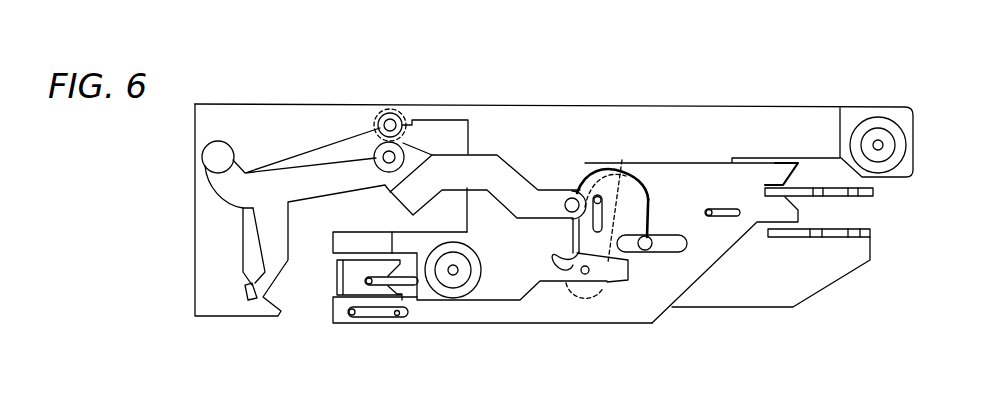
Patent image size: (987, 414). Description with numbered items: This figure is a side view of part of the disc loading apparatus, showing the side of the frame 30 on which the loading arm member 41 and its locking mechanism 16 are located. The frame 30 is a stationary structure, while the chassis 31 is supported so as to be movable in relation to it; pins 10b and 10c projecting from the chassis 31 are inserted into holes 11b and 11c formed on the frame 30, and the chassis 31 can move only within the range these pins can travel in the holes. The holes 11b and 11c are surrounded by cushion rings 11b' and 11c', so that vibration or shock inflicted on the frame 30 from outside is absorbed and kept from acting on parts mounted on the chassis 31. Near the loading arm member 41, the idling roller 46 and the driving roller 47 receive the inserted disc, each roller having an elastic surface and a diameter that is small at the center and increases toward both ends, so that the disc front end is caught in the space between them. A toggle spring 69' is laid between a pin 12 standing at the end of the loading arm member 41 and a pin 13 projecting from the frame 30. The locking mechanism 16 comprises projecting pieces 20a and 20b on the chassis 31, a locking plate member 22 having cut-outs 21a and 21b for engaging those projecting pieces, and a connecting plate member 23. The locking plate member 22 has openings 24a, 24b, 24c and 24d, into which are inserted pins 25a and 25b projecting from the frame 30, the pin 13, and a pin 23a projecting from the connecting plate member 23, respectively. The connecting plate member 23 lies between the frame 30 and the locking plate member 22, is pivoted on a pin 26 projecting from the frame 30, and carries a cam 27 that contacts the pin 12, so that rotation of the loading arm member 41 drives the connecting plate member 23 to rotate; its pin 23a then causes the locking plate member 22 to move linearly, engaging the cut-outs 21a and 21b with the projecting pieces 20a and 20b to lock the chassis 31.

The frame 30 is at (557, 112).
The idling roller 46 is at (414, 131).
The driving roller 47 is at (374, 152).
The loading arm member 41 is at (514, 184).
The pin 12 is at (566, 198).
The cam 27 is at (571, 240).
The connecting plate member 23 is at (560, 300).
The pin 26 is at (596, 300).
The pin 13 is at (663, 236).
The toggle spring 69' is at (669, 186).
The opening 24d is at (603, 215).
The pin 23a is at (594, 196).
The opening 24c is at (670, 248).
The opening 24b is at (738, 218).
The pin 25b is at (707, 208).
The cut-out 21a is at (769, 186).
The projecting piece 20a is at (800, 192).
The chassis 31 is at (858, 253).
The locking plate member 22 is at (663, 313).
The locking mechanism 16 is at (633, 331).
The projecting piece 20b is at (382, 277).
The cut-out 21b is at (380, 318).
The opening 24a is at (400, 318).
The pin 25a is at (350, 320).
The pin 10c is at (454, 282).
The hole 11c is at (475, 255).
The cushion ring 11c' is at (475, 270).
The pin 10b is at (877, 140).
The hole 11b is at (911, 142).
The cushion ring 11b' is at (909, 145).